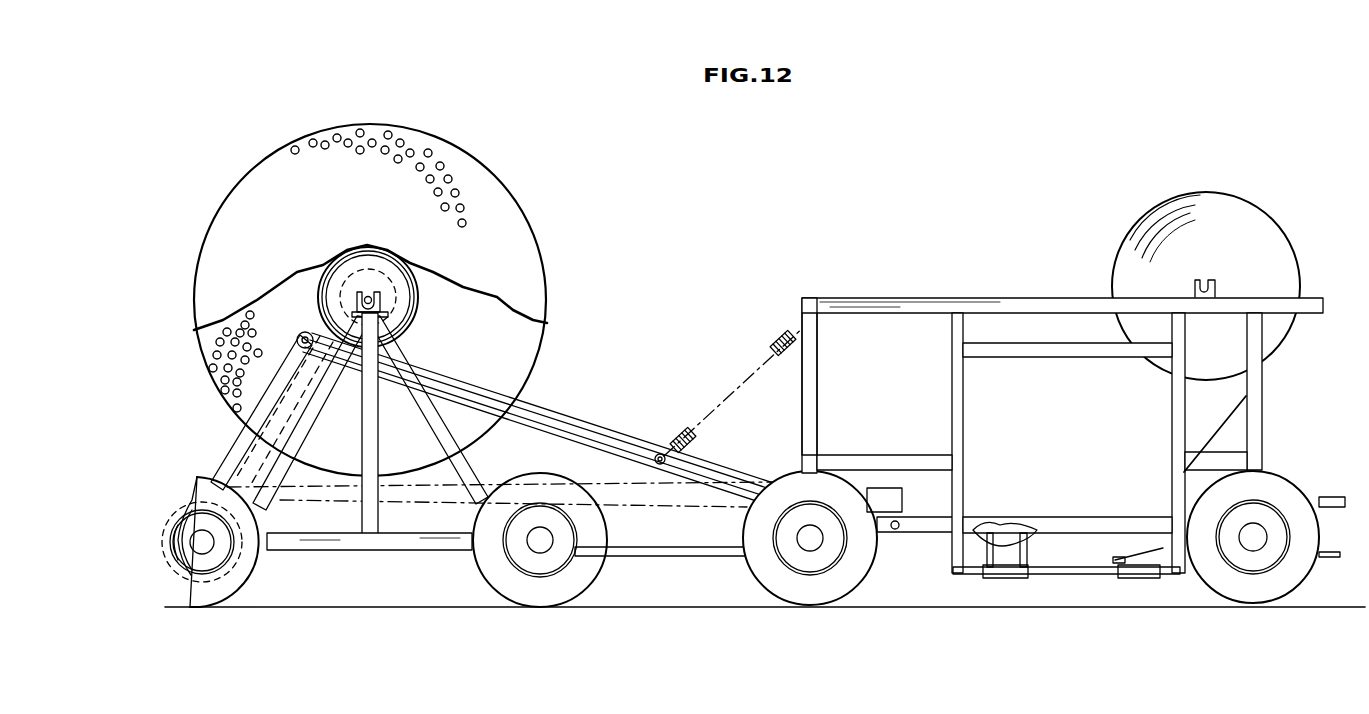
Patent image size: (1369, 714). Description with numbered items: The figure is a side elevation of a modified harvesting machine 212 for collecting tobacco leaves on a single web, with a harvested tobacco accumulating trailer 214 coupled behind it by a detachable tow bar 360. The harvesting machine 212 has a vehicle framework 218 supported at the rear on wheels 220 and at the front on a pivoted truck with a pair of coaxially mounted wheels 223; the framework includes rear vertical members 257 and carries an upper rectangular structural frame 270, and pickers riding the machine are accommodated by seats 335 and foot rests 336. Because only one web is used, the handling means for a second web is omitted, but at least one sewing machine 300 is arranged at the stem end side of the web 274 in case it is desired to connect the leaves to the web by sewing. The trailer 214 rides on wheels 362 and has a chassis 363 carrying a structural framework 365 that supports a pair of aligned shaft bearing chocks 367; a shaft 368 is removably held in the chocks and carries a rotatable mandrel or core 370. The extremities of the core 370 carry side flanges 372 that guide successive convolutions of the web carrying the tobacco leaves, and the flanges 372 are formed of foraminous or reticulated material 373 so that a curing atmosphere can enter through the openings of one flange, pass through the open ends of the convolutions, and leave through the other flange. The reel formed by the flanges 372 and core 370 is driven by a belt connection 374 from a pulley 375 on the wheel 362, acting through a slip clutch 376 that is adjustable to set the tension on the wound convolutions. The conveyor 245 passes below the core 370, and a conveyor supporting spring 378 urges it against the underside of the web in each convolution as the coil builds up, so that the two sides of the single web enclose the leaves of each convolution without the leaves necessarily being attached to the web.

The harvesting machine 212 is at (1268, 378).
The harvested tobacco accumulating trailer 214 is at (549, 298).
The vehicle framework 218 is at (902, 299).
The rear wheels 220 is at (855, 567).
The coaxially mounted wheels 223 is at (1232, 586).
The conveyor 245 is at (597, 422).
The rear vertical members 257 is at (818, 402).
The rectangular structural frame 270 is at (1072, 296).
The web 274 is at (1222, 435).
The sewing machine 300 is at (901, 500).
The seats 335 is at (1000, 524).
The foot rests 336 is at (1122, 560).
The detachable tow bar 360 is at (667, 557).
The wheel 362 is at (250, 567).
The chassis 363 is at (398, 550).
The structural framework 365 is at (362, 456).
The shaft bearing chocks 367 is at (388, 312).
The shaft 368 is at (373, 298).
The mandrel or core 370 is at (364, 276).
The side flanges 372 is at (481, 174).
The foraminous or reticulated material 373 is at (404, 152).
The belt connection 374 is at (238, 455).
The pulley 375 is at (186, 546).
The slip clutch 376 is at (378, 262).
The conveyor supporting spring 378 is at (736, 384).